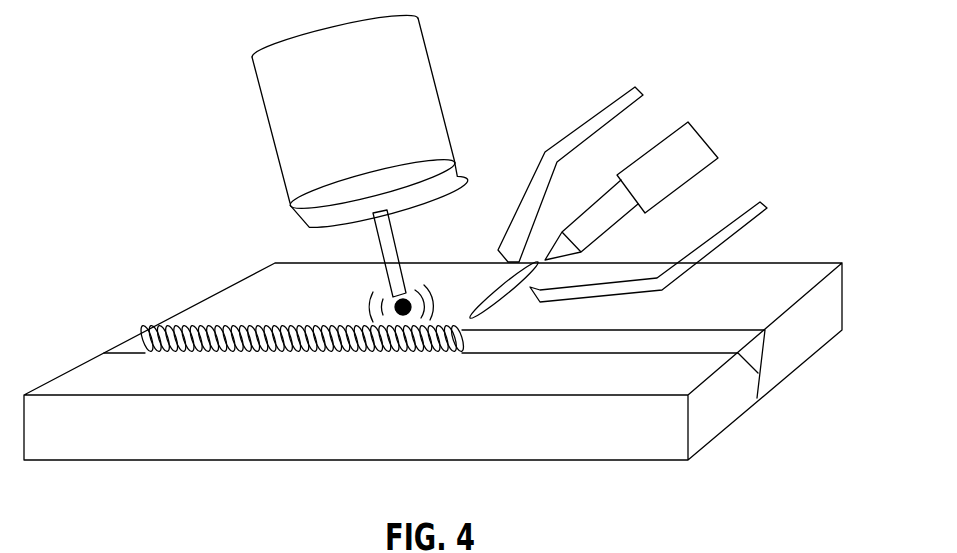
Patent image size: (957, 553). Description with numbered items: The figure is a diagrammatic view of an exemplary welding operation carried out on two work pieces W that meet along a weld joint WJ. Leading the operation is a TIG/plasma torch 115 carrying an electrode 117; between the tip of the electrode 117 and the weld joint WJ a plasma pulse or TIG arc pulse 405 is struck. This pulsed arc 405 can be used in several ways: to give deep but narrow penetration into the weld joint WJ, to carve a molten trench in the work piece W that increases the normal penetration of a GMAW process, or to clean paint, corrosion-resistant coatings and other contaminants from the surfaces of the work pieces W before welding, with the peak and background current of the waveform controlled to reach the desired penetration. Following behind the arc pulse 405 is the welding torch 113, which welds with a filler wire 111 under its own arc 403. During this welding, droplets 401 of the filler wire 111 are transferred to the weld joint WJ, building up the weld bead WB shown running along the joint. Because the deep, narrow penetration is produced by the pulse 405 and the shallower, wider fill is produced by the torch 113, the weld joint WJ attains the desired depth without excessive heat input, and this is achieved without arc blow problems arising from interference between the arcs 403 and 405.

The torch 113 is at (403, 70).
The filler wire 111 is at (373, 250).
The TIG/plasma torch 115 is at (700, 146).
The electrode 117 is at (605, 235).
The droplets 401 is at (395, 305).
The arc 403 is at (430, 297).
The plasma pulse or TIG arc pulse 405 is at (500, 305).
The work pieces W is at (652, 448).
The weld joint WJ is at (752, 347).
The weld bead WB is at (273, 343).